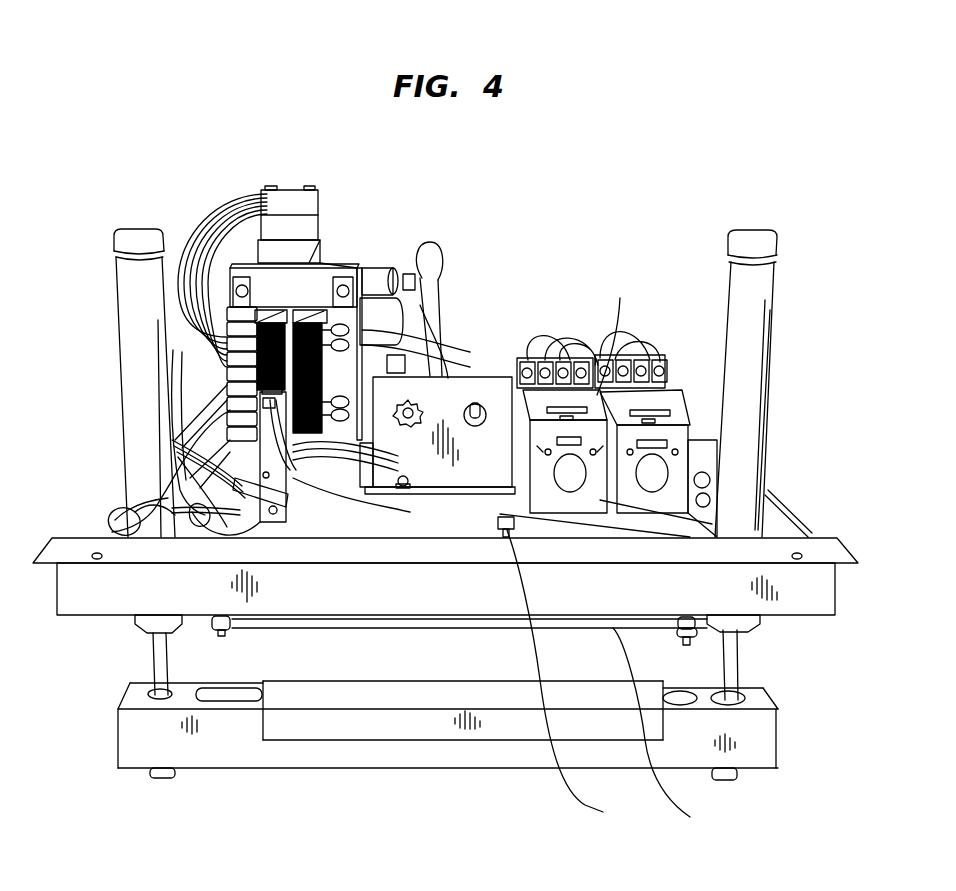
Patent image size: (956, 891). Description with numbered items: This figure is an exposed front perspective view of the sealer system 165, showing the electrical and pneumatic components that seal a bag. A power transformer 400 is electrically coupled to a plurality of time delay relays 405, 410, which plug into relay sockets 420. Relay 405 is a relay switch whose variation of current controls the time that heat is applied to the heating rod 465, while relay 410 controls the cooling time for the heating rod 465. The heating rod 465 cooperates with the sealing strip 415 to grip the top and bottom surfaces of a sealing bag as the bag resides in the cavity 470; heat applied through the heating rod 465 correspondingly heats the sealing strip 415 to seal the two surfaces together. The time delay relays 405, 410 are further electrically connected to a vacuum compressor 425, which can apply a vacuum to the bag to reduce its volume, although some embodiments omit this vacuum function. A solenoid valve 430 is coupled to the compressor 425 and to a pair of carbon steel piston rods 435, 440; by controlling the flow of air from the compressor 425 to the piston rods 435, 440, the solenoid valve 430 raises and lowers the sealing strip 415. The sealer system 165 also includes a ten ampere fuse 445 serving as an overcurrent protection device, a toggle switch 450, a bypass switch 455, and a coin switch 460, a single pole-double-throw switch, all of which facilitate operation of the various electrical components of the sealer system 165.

The sealer system 165 is at (742, 150).
The power transformer 400 is at (230, 367).
The time delay relay 405 is at (560, 412).
The time delay relay 410 is at (642, 412).
The sealing strip 415 is at (290, 740).
The relay sockets 420 is at (619, 336).
The vacuum compressor 425 is at (288, 202).
The solenoid valve 430 is at (268, 452).
The carbon steel piston rod 435 is at (128, 345).
The carbon steel piston rod 440 is at (763, 320).
The fuse 445 is at (410, 400).
The toggle switch 450 is at (473, 402).
The bypass switch 455 is at (110, 530).
The coin switch 460 is at (573, 675).
The heating rod 465 is at (670, 727).
The cavity 470 is at (441, 660).